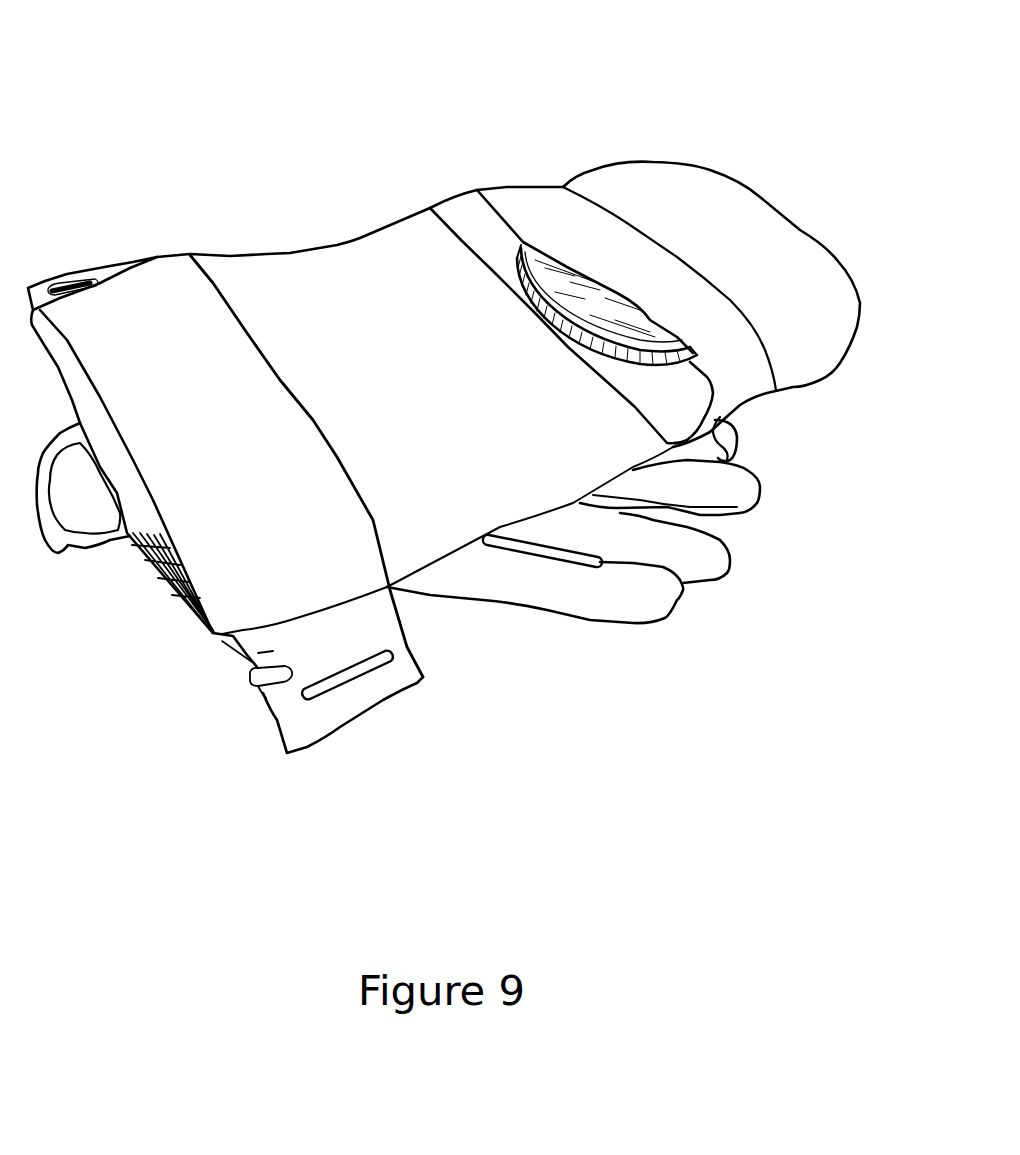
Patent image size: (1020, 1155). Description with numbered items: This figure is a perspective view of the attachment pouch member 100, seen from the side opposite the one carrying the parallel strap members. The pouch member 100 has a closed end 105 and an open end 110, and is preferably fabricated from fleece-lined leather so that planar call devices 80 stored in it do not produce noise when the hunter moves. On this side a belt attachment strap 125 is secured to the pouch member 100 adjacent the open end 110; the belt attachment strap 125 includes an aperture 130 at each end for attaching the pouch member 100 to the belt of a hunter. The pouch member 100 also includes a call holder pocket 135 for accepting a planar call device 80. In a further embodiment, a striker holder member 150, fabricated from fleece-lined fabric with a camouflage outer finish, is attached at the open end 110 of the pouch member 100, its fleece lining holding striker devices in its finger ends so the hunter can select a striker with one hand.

The planar call device 80 is at (596, 300).
The attachment pouch member 100 is at (393, 355).
The closed end 105 is at (782, 212).
The open end 110 is at (50, 379).
The belt attachment strap 125 is at (157, 337).
The aperture 130 is at (76, 286).
The call holder pocket 135 is at (703, 368).
The striker holder member 150 is at (482, 565).